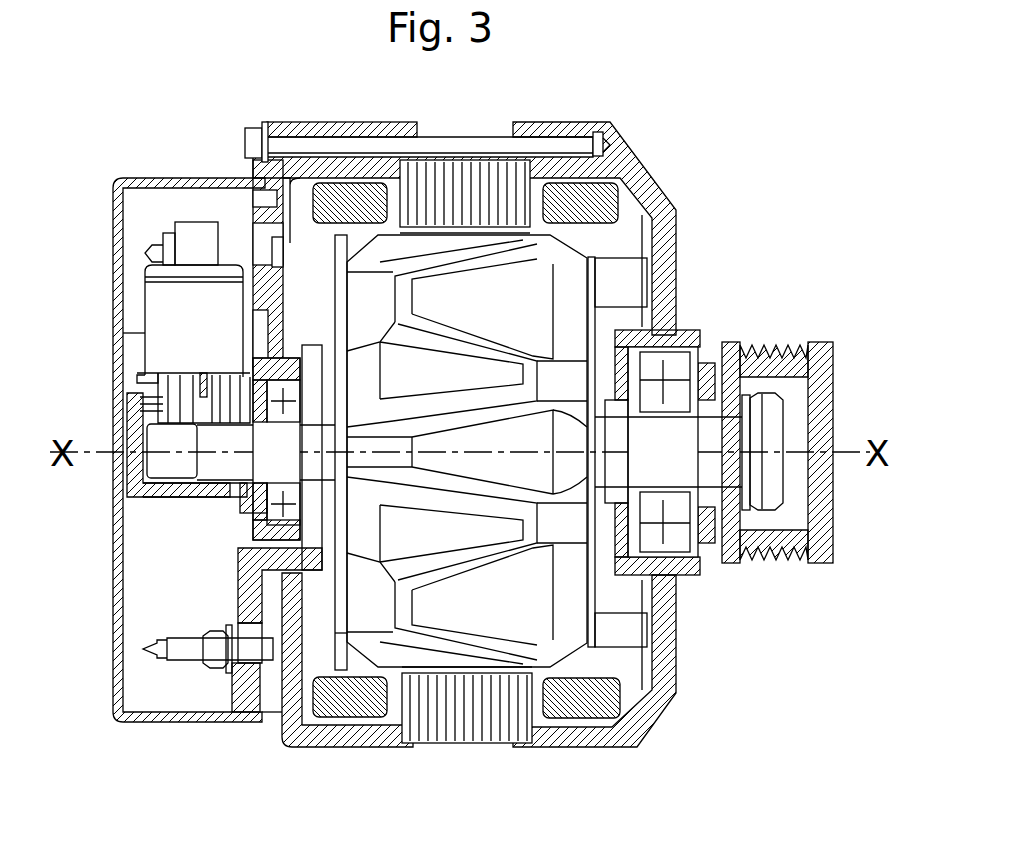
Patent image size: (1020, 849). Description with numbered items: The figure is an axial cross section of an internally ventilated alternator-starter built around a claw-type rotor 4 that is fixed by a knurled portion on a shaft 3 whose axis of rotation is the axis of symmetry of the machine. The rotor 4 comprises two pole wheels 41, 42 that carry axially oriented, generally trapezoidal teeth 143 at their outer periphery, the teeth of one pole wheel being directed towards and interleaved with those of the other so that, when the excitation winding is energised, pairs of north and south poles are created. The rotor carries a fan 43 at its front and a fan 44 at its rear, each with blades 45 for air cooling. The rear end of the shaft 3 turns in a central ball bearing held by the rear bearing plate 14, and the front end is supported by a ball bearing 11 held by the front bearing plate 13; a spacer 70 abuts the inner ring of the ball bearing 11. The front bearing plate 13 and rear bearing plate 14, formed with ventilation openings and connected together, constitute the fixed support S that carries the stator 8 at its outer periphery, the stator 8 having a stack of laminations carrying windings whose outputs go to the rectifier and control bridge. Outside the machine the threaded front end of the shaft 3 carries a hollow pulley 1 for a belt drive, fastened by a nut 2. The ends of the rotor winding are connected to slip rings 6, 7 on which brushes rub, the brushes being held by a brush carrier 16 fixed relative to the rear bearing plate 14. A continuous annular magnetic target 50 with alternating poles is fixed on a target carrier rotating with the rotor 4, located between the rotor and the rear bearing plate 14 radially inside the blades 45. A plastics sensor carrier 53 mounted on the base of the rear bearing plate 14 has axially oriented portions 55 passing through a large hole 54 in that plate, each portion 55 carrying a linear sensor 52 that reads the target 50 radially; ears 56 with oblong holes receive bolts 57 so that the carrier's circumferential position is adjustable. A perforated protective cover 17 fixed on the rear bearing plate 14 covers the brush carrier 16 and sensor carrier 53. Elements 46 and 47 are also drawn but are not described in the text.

The pulley 1 is at (803, 343).
The washer 2 is at (773, 410).
The shaft 3 is at (683, 487).
The claw-type rotor 4 is at (580, 240).
The slip ring 6 is at (158, 466).
The slip ring 7 is at (167, 430).
The stator 8 is at (463, 172).
The ball bearing 11 is at (680, 360).
The front bearing plate 13 is at (677, 232).
The rear bearing plate 14 is at (262, 200).
The brush carrier 16 is at (123, 333).
The perforated protective cover 17 is at (113, 220).
The pole wheel 41 is at (572, 598).
The pole wheel 42 is at (363, 253).
The fan 43 is at (600, 312).
The fan 44 is at (323, 243).
The blades 45 is at (330, 620).
The bearing retaining plate 46 is at (253, 536).
The bearing support 47 is at (230, 465).
The target 50 is at (307, 340).
The sensor 52 is at (303, 600).
The sensor carrier 53 is at (243, 600).
The hole 54 is at (255, 330).
The axially oriented portion 55 is at (247, 567).
The ears 56 is at (248, 676).
The bolt 57 is at (178, 658).
The spacer 70 is at (780, 407).
The teeth 143 is at (444, 657).
The support S is at (680, 695).